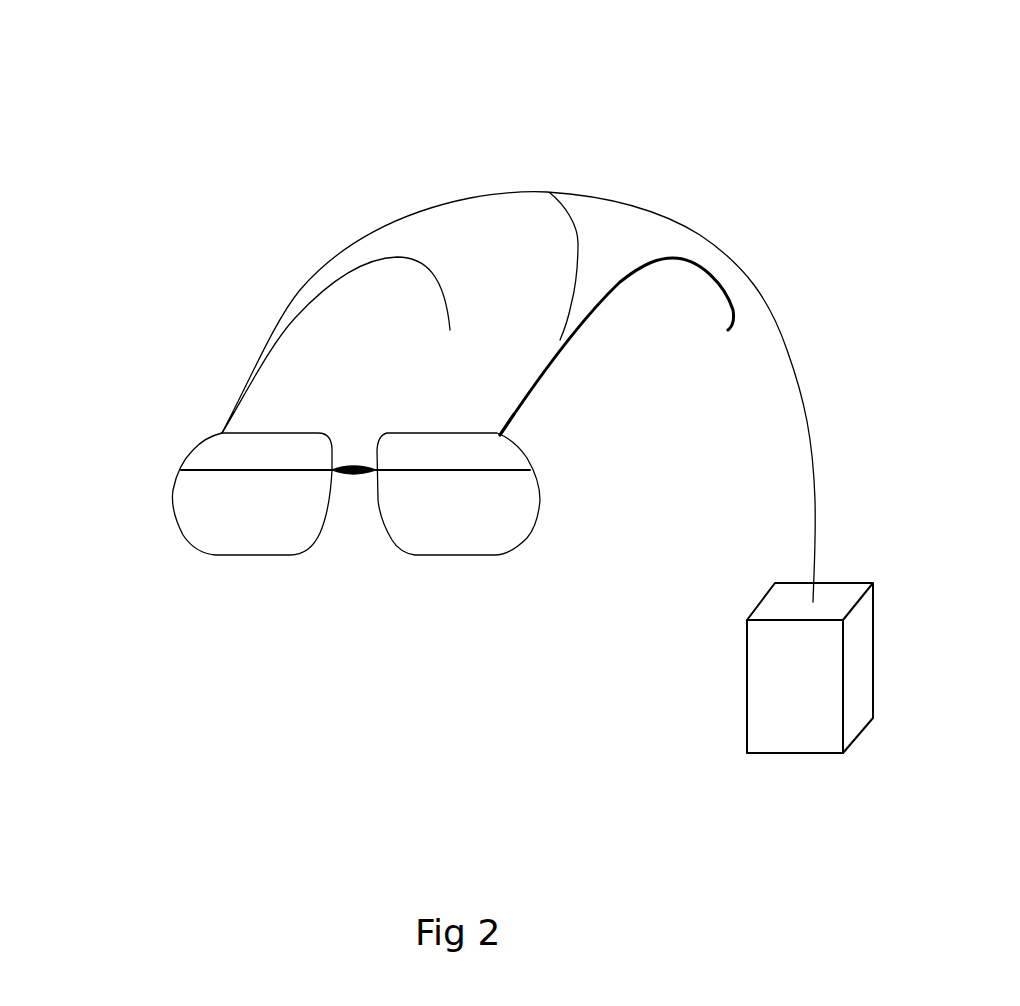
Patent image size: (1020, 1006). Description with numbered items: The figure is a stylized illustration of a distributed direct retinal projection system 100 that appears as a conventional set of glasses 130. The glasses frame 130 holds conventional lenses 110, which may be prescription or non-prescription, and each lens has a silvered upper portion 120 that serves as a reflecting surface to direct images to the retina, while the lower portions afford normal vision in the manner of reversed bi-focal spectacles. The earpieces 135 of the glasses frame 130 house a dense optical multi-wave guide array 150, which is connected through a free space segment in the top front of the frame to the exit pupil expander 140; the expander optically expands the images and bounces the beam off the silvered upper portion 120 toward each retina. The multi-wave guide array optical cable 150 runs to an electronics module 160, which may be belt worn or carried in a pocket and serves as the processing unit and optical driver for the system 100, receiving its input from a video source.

The distributed direct retinal projection system 100 is at (393, 536).
The lenses 110 is at (231, 525).
The silvered upper portion 120 is at (295, 437).
The glasses frame 130 is at (165, 462).
The earpieces 135 is at (235, 367).
The exit pupil expander 140 is at (238, 437).
The multi-wave guide array optical cable 150 is at (593, 184).
The electronics module 160 is at (789, 697).